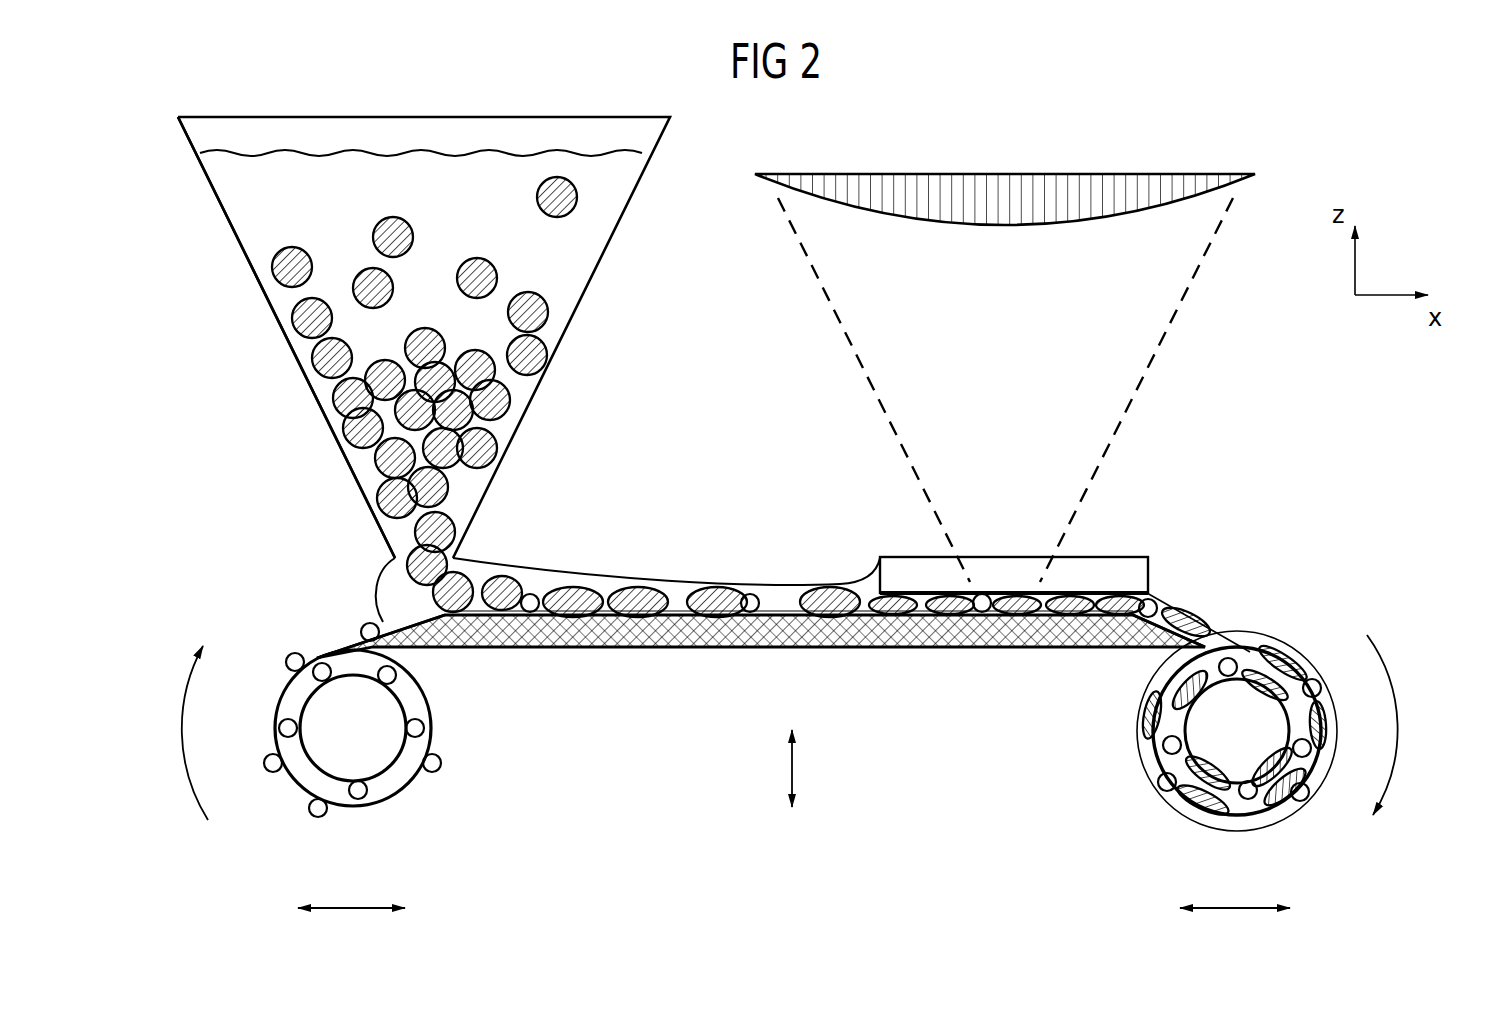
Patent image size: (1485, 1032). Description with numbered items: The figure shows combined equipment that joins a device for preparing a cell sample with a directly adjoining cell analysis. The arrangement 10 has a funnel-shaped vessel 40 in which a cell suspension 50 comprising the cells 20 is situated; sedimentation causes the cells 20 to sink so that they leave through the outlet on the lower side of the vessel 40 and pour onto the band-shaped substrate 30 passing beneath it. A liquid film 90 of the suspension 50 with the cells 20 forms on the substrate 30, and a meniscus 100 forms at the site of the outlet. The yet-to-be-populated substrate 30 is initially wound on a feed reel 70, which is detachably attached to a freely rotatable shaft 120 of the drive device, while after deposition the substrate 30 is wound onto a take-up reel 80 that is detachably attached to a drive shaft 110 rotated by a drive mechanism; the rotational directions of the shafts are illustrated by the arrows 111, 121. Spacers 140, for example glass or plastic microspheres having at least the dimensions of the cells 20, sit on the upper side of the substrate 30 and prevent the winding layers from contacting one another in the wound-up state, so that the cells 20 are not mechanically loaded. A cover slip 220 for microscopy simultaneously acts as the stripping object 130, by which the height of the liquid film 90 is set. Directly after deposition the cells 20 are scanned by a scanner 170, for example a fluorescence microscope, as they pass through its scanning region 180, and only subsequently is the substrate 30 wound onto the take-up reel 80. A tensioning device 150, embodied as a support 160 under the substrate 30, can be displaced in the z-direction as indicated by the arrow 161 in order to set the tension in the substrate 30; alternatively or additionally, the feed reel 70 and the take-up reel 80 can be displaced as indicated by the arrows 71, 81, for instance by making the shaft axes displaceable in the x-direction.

The arrangement 10 is at (205, 441).
The cells 20 is at (565, 203).
The substrate 30 is at (360, 643).
The funnel-shaped vessel 40 is at (397, 115).
The cell suspension 50 is at (235, 200).
The feed reel 70 is at (420, 800).
The arrow 71 is at (372, 906).
The take-up reel 80 is at (1140, 809).
The arrow 81 is at (1215, 906).
The liquid film 90 is at (793, 597).
The meniscus 100 is at (398, 582).
The drive shaft 110 is at (385, 710).
The arrow 111 is at (178, 728).
The rotatable shaft 120 is at (1260, 755).
The arrow 121 is at (1397, 710).
The stripping object 130 is at (1127, 556).
The spacers 140 is at (530, 597).
The tensioning device 150 is at (602, 793).
The support 160 is at (905, 650).
The arrow 161 is at (794, 770).
The scanner 170 is at (1162, 192).
The scanning region 180 is at (1182, 325).
The cover slip 220 is at (1040, 541).